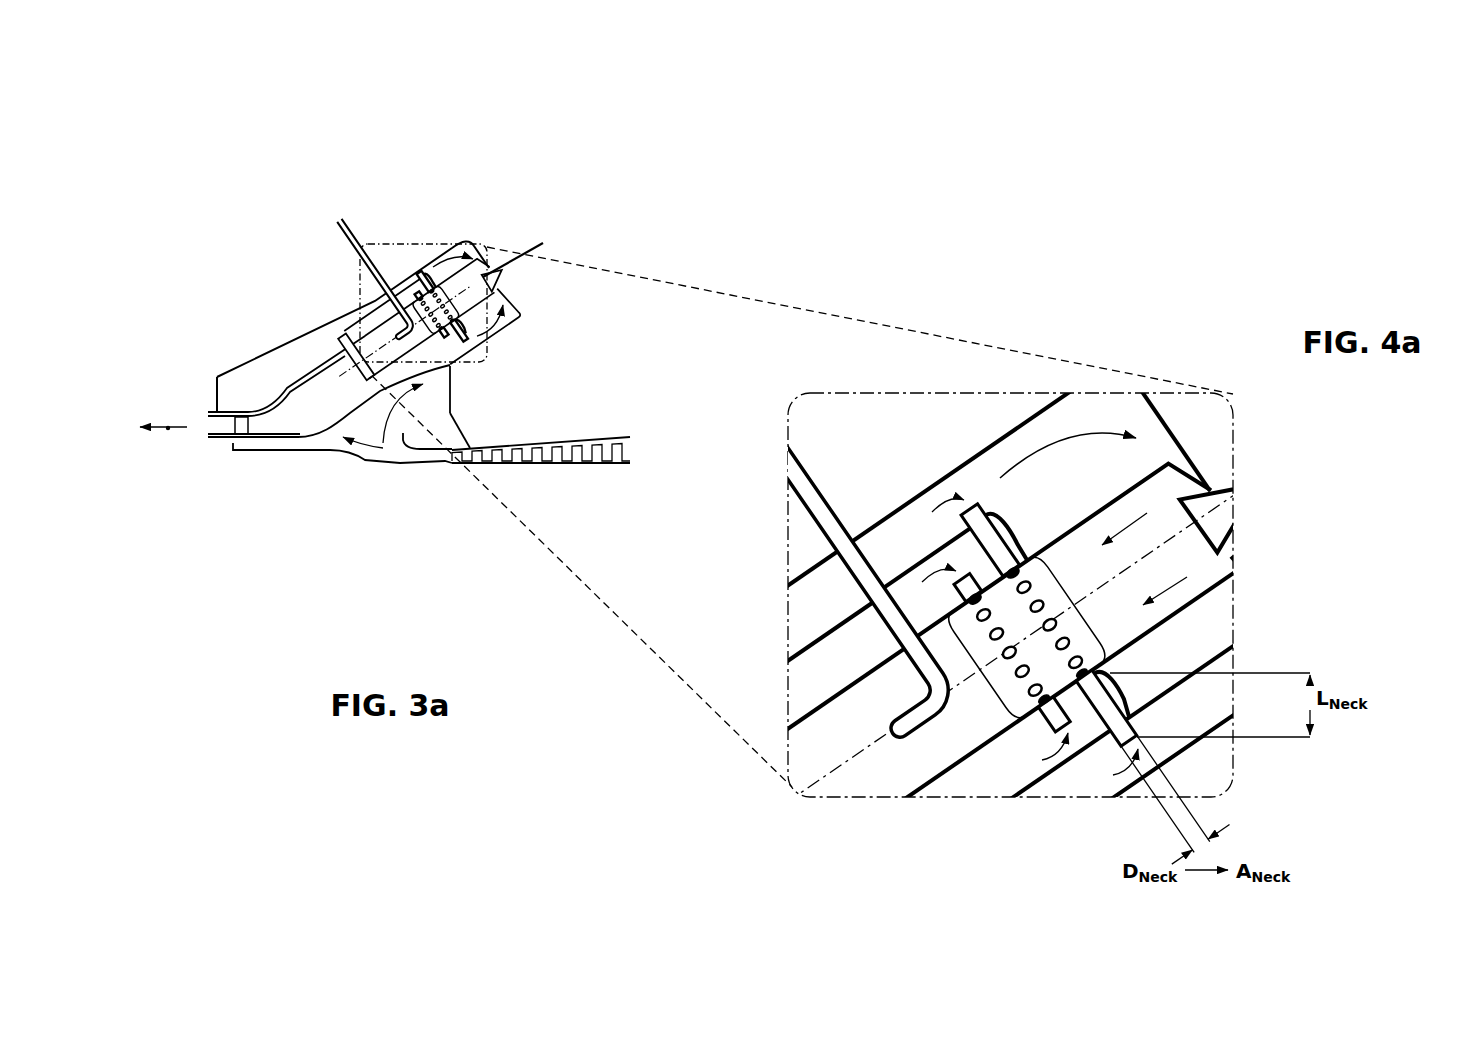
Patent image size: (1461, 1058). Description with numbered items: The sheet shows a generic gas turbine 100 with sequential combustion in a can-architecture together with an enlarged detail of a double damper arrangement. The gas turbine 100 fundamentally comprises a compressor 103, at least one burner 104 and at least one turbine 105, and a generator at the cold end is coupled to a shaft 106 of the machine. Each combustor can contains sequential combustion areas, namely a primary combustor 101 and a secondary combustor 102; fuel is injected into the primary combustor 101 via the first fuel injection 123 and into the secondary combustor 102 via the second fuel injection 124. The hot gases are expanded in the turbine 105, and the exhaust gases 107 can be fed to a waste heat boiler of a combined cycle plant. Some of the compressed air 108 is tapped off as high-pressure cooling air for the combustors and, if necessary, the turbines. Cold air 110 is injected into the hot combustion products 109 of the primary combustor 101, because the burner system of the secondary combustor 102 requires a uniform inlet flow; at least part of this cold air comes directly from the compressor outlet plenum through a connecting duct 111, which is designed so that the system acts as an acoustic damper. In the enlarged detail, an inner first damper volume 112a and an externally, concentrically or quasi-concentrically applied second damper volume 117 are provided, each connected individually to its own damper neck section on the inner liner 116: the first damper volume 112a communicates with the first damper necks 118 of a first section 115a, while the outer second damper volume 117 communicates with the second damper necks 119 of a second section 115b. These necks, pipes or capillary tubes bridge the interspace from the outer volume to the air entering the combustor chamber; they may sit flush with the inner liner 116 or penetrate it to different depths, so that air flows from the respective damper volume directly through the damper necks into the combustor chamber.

In FIG. 3a, the gas turbine 100 is at (312, 205).
In FIG. 3a, the primary combustor 101 is at (461, 291).
In FIG. 4a, the primary combustor 101 is at (1158, 528).
In FIG. 3a, the secondary combustor 102 is at (325, 387).
In FIG. 3a, the compressor 103 is at (580, 465).
In FIG. 3a, the burner 104 is at (535, 273).
In FIG. 3a, the turbine 105 is at (238, 468).
In FIG. 3a, the shaft 106 is at (358, 513).
In FIG. 3a, the exhaust gases 107 is at (168, 430).
In FIG. 3a, the compressed air 108 is at (425, 460).
In FIG. 4a, the hot combustion products 109 is at (1121, 523).
In FIG. 4a, the cold air 110 is at (1006, 742).
In FIG. 4a, the connecting duct 111 is at (830, 661).
In FIG. 4a, the first damper volume 112a is at (1026, 748).
In FIG. 3a, the first section 115a is at (430, 319).
In FIG. 4a, the first section 115a is at (997, 693).
In FIG. 3a, the second section 115b is at (445, 303).
In FIG. 4a, the second section 115b is at (1094, 627).
In FIG. 3a, the inner liner 116 is at (460, 330).
In FIG. 4a, the inner liner 116 is at (975, 795).
In FIG. 3a, the second damper volume 117 is at (382, 305).
In FIG. 4a, the second damper volume 117 is at (914, 525).
In FIG. 3a, the first damper necks 118 is at (419, 296).
In FIG. 4a, the first damper necks 118 is at (963, 587).
In FIG. 3a, the second damper necks 119 is at (427, 281).
In FIG. 4a, the second damper necks 119 is at (978, 520).
In FIG. 3a, the first fuel injection 123 is at (533, 245).
In FIG. 3a, the second fuel injection 124 is at (357, 233).
In FIG. 4a, the second fuel injection 124 is at (822, 510).